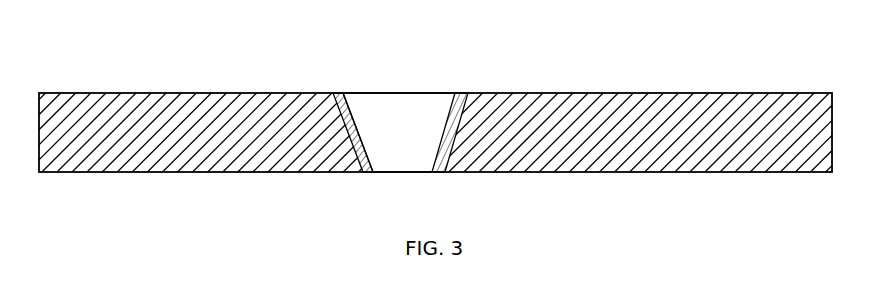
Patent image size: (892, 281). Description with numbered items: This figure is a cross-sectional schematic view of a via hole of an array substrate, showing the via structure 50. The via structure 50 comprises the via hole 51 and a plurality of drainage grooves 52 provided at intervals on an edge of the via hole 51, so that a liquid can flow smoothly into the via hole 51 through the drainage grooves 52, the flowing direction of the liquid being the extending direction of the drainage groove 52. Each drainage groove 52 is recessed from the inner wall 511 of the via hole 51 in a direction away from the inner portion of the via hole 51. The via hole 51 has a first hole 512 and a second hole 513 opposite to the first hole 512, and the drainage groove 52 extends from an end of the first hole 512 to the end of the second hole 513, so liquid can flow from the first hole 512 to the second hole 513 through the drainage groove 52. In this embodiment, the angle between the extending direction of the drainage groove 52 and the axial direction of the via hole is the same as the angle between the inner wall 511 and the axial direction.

The via structure 50 is at (407, 160).
The via hole 51 is at (393, 107).
The inner wall 511 is at (349, 108).
The first hole 512 is at (427, 93).
The second hole 513 is at (392, 174).
The drainage groove 52 is at (342, 97).